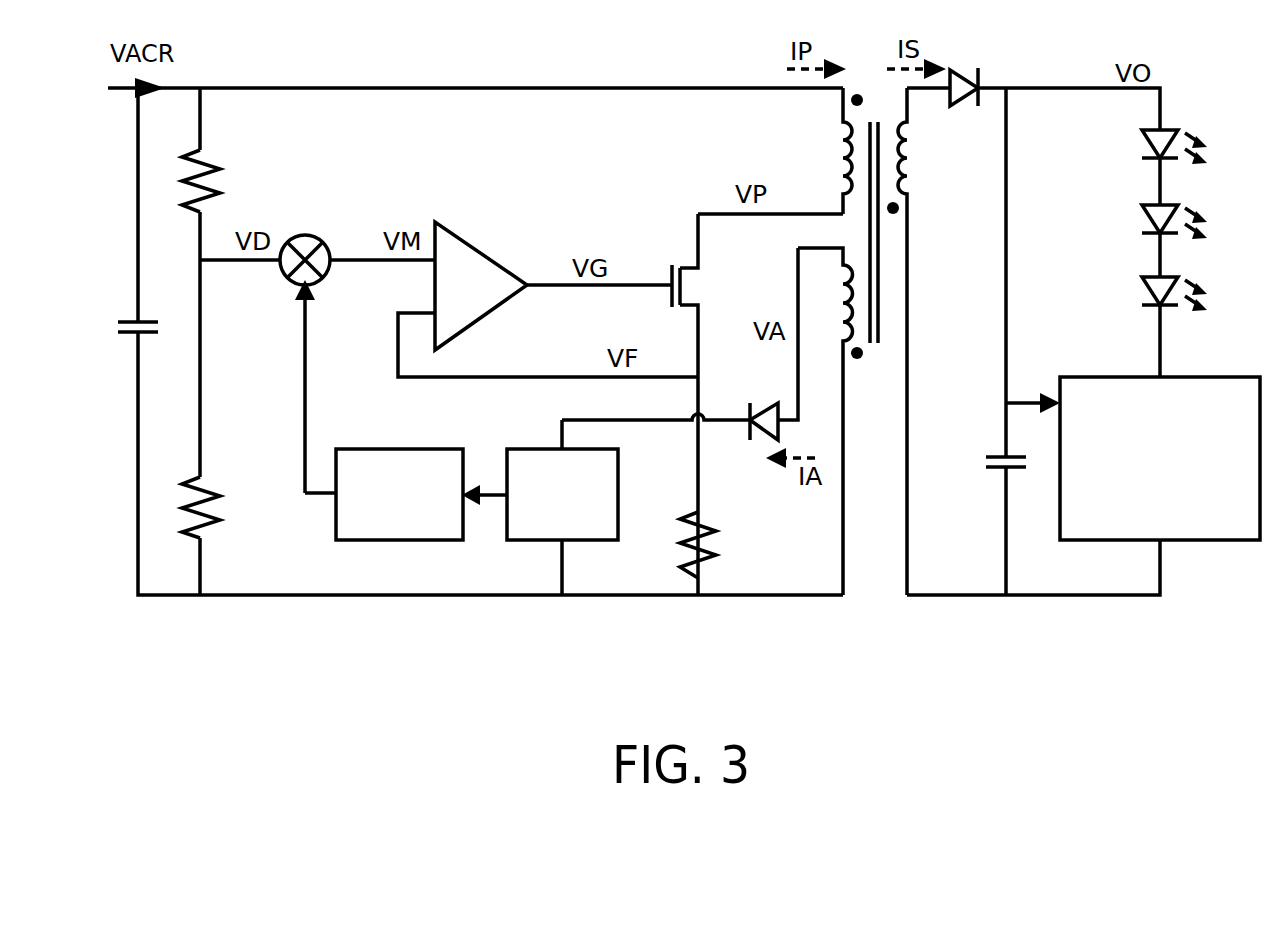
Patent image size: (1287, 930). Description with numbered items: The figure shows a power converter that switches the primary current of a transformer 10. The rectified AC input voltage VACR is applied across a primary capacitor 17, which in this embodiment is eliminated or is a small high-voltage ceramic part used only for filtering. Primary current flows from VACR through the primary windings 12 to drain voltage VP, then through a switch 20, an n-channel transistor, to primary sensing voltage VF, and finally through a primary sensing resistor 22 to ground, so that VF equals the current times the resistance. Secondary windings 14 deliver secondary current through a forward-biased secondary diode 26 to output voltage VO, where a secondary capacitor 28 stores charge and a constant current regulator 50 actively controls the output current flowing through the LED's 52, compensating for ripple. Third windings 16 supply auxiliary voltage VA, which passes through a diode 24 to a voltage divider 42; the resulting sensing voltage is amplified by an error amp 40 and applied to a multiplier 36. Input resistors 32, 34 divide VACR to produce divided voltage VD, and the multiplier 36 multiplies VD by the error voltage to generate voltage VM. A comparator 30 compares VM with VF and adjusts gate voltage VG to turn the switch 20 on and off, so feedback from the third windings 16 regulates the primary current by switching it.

The transformer 10 is at (878, 343).
The primary windings 12 is at (842, 158).
The secondary windings 14 is at (907, 175).
The third windings 16 is at (843, 310).
The primary capacitor 17 is at (146, 318).
The switch 20 is at (700, 290).
The primary sensing resistor 22 is at (712, 525).
The diode 24 is at (770, 405).
The secondary diode 26 is at (962, 66).
The secondary capacitor 28 is at (988, 462).
The comparator 30 is at (480, 250).
The input resistor 32 is at (218, 168).
The input resistor 34 is at (212, 530).
The multiplier 36 is at (323, 243).
The error amp 40 is at (399, 494).
The voltage divider 42 is at (562, 494).
The constant current regulator 50 is at (1160, 458).
The LED's 52 is at (1140, 140).